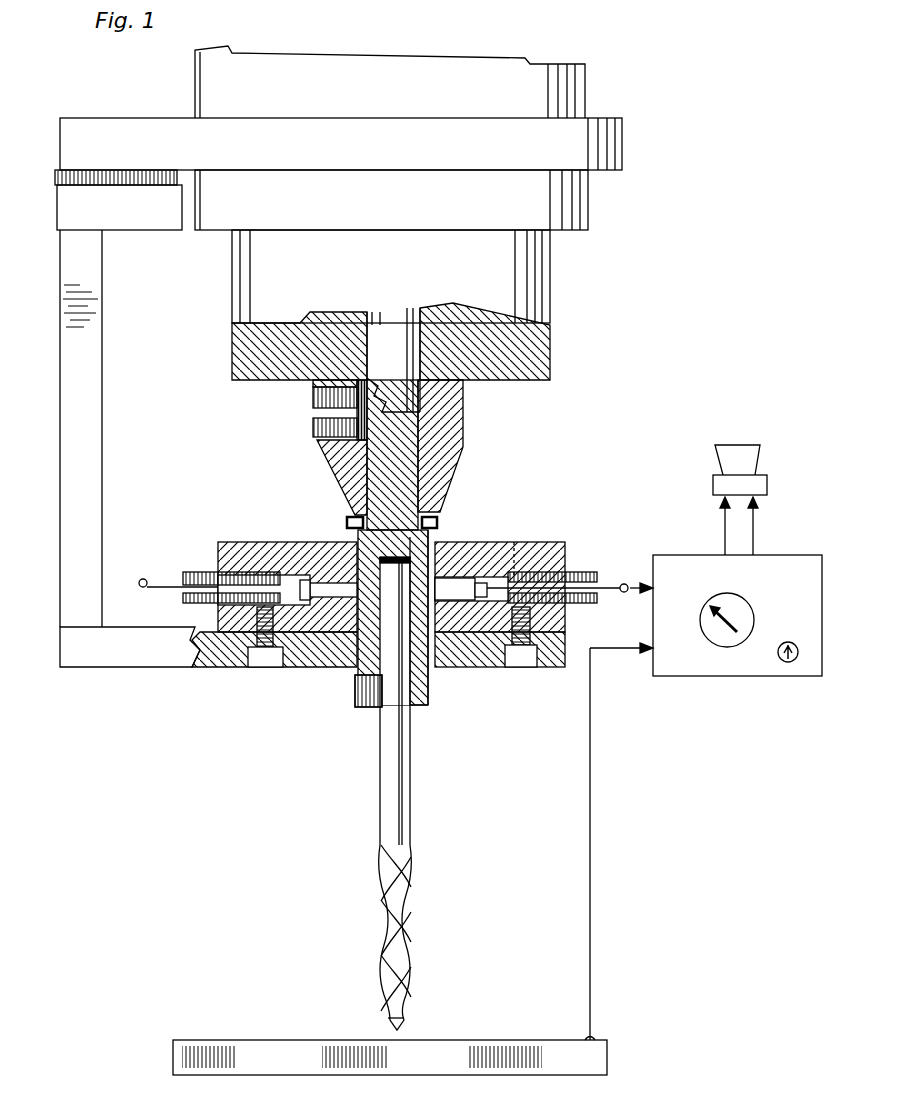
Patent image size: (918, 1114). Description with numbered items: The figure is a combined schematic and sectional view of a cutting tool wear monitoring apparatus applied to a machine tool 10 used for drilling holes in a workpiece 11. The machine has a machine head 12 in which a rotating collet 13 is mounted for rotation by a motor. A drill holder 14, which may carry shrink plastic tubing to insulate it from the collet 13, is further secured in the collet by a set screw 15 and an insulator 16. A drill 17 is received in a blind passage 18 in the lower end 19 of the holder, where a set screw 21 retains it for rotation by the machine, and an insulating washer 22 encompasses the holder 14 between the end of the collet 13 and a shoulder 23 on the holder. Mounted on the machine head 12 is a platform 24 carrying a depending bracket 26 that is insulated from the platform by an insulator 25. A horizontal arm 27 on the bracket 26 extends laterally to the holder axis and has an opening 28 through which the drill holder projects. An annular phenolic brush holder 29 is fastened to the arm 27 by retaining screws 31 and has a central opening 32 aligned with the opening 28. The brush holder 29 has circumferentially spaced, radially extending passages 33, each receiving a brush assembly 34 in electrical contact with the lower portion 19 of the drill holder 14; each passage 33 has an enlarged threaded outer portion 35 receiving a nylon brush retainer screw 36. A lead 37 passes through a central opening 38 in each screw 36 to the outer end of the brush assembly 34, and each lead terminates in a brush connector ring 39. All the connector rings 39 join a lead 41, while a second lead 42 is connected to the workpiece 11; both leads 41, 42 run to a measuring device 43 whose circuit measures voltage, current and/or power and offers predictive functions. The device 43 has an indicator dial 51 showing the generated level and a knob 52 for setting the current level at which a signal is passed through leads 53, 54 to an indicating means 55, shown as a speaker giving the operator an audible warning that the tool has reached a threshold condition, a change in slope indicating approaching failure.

The machine tool 10 is at (640, 100).
The workpiece 11 is at (232, 1055).
The machine head 12 is at (533, 267).
The collet 13 is at (455, 420).
The drill holder 14 is at (330, 460).
The set screw 15 is at (313, 398).
The insulator 16 is at (313, 430).
The drill 17 is at (402, 795).
The blind passage 18 is at (428, 685).
The lower end 19 is at (422, 705).
The set screw 21 is at (360, 708).
The insulating washer 22 is at (437, 510).
The shoulder 23 is at (357, 525).
The platform 24 is at (128, 98).
The insulator 25 is at (148, 230).
The depending bracket 26 is at (100, 445).
The horizontal arm 27 is at (130, 652).
The opening 28 is at (352, 653).
The brush holder 29 is at (527, 550).
The retaining screws 31 is at (250, 655).
The central opening 32 is at (343, 540).
The passages 33 is at (457, 585).
The brush assembly 34 is at (325, 585).
The threaded outer portion 35 is at (205, 600).
The brush retainer screw 36 is at (190, 572).
The lead 37 is at (514, 540).
The central opening 38 is at (573, 605).
The brush connector ring 39 is at (139, 582).
The lead 41 is at (630, 585).
The second lead 42 is at (592, 800).
The measuring device 43 is at (742, 660).
The indicator dial 51 is at (745, 610).
The knob 52 is at (782, 665).
The lead 53 is at (720, 518).
The lead 54 is at (755, 537).
The indicating means 55 is at (740, 448).